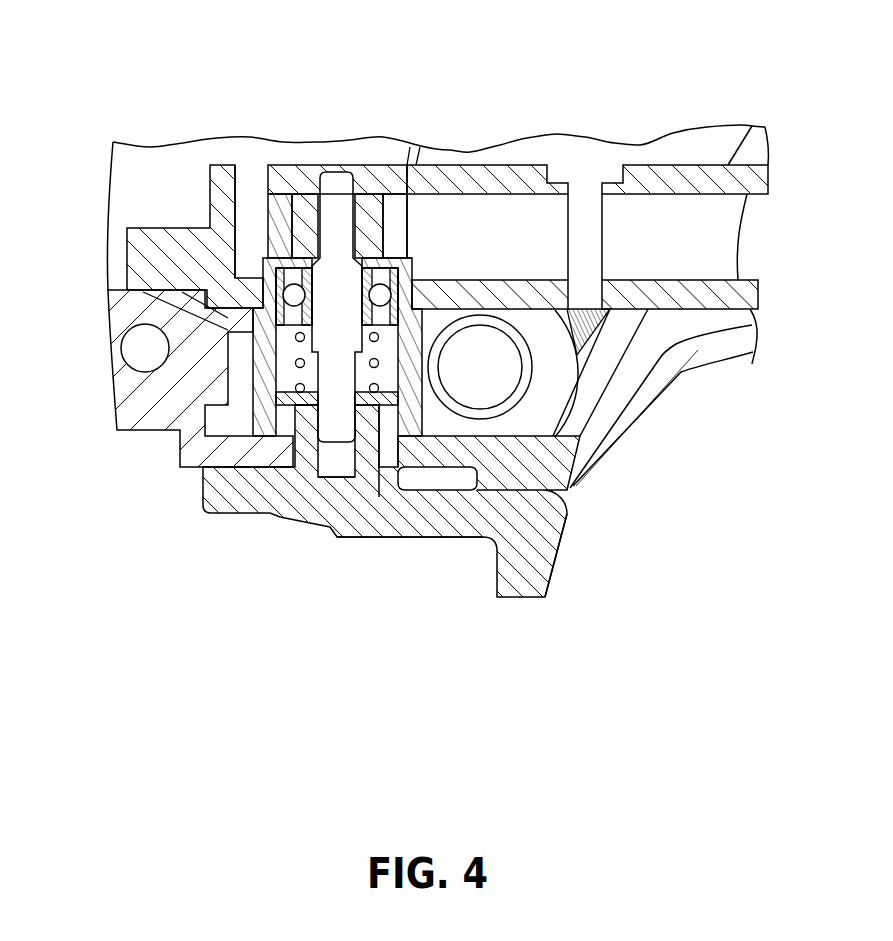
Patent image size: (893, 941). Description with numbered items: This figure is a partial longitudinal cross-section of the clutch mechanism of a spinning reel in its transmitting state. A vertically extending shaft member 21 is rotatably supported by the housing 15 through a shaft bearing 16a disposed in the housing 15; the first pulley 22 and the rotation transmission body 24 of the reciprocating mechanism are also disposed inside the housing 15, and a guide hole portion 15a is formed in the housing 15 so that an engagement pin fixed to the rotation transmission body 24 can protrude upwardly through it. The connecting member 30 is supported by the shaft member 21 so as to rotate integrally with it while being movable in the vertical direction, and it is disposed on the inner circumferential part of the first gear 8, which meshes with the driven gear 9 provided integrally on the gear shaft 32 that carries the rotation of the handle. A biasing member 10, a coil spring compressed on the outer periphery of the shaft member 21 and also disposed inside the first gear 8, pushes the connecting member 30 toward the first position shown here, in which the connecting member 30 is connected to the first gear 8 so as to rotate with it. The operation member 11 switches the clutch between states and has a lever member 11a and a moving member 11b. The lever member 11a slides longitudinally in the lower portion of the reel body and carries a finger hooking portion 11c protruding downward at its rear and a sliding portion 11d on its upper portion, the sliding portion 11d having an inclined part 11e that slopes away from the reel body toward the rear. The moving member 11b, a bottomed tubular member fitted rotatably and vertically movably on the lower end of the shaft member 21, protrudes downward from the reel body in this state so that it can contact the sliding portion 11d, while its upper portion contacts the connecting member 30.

The first gear 8 is at (244, 350).
The driven gear 9 is at (507, 408).
The biasing member 10 is at (296, 364).
The operation member 11 is at (494, 598).
The lever member 11a is at (441, 537).
The moving member 11b is at (340, 480).
The finger hooking portion 11c is at (537, 598).
The sliding portion 11d is at (260, 462).
The inclined part 11e is at (318, 412).
The housing 15 is at (509, 158).
The guide hole portion 15a is at (238, 182).
The shaft bearing 16a is at (283, 265).
The shaft member 21 is at (341, 190).
The first pulley 22 is at (368, 210).
The rotation transmission body 24 is at (291, 290).
The connecting member 30 is at (387, 408).
The gear shaft 32 is at (497, 370).